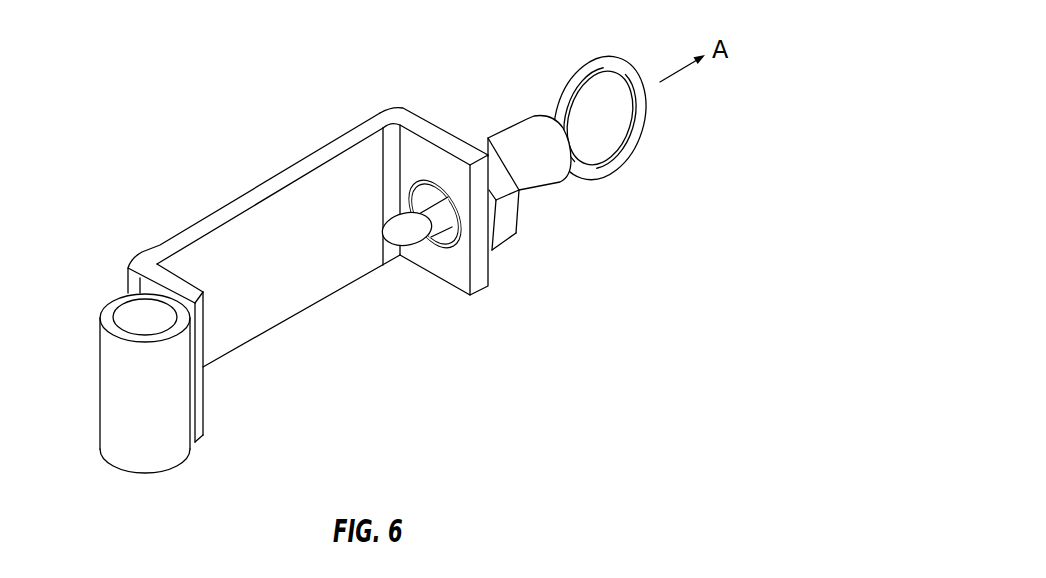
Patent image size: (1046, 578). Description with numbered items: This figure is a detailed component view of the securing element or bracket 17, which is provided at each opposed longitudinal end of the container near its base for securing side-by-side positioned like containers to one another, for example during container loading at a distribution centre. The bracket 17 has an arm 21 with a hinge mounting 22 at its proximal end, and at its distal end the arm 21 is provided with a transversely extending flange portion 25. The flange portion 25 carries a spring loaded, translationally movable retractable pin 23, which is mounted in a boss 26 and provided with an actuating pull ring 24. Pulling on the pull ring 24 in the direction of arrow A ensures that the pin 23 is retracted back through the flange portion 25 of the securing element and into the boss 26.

The securing element or bracket 17 is at (156, 102).
The arm 21 is at (267, 307).
The hinge mounting 22 is at (114, 398).
The retractable pin 23 is at (412, 237).
The actuating pull ring 24 is at (621, 72).
The flange portion 25 is at (423, 130).
The boss 26 is at (531, 182).